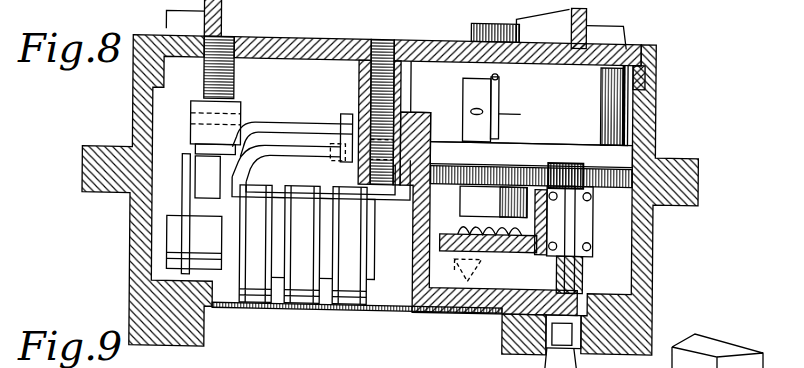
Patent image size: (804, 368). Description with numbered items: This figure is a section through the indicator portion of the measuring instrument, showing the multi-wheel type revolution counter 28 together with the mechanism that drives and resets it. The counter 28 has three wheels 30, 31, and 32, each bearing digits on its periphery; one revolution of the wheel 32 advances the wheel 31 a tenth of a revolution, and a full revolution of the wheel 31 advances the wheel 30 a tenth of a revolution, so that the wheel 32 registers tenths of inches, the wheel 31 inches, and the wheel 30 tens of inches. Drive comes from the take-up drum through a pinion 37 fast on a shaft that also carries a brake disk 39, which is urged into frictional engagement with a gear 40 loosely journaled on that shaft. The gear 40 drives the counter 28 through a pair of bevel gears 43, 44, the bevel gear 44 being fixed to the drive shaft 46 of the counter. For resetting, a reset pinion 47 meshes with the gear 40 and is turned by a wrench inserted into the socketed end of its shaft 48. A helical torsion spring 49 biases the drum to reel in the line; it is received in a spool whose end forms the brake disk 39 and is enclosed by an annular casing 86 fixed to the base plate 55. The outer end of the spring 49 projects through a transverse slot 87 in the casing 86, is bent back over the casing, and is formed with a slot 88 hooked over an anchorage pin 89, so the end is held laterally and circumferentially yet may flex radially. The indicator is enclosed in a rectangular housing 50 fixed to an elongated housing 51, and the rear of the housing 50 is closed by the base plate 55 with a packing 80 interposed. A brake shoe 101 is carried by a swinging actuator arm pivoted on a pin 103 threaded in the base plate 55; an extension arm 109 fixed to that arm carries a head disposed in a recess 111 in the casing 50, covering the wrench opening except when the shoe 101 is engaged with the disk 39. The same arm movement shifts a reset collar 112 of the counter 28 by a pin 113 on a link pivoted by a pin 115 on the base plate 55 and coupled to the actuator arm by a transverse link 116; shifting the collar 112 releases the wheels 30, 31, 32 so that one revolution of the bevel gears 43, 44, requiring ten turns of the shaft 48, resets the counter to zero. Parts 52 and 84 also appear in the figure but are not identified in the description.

The multi-wheel type revolution counter 28 is at (380, 302).
The wheel 30 is at (258, 303).
The wheel 31 is at (302, 302).
The wheel 32 is at (348, 300).
The pinion 37 is at (470, 30).
The brake disk 39 is at (555, 150).
The gear 40 is at (503, 170).
The bevel gear 43 is at (470, 222).
The bevel gear 44 is at (480, 252).
The drive shaft 46 is at (466, 227).
The reset pinion 47 is at (560, 170).
The shaft 48 is at (563, 265).
The helical torsion spring 49 is at (498, 90).
The rectangular housing 50 is at (662, 257).
The elongated housing 51 is at (600, 15).
The flange 52 is at (93, 158).
The base plate 55 is at (320, 45).
The packing 80 is at (642, 78).
The bearing support 84 is at (520, 250).
The annular casing 86 is at (624, 98).
The transverse slot 87 is at (515, 114).
The slot 88 is at (463, 108).
The anchorage pin 89 is at (470, 111).
The brake shoe 101 is at (332, 157).
The pin 103 is at (375, 96).
The extension arm 109 is at (483, 305).
The recess 111 is at (540, 357).
The reset collar 112 is at (222, 250).
The pin 113 is at (188, 182).
The pin 115 is at (236, 86).
The transverse link 116 is at (270, 124).